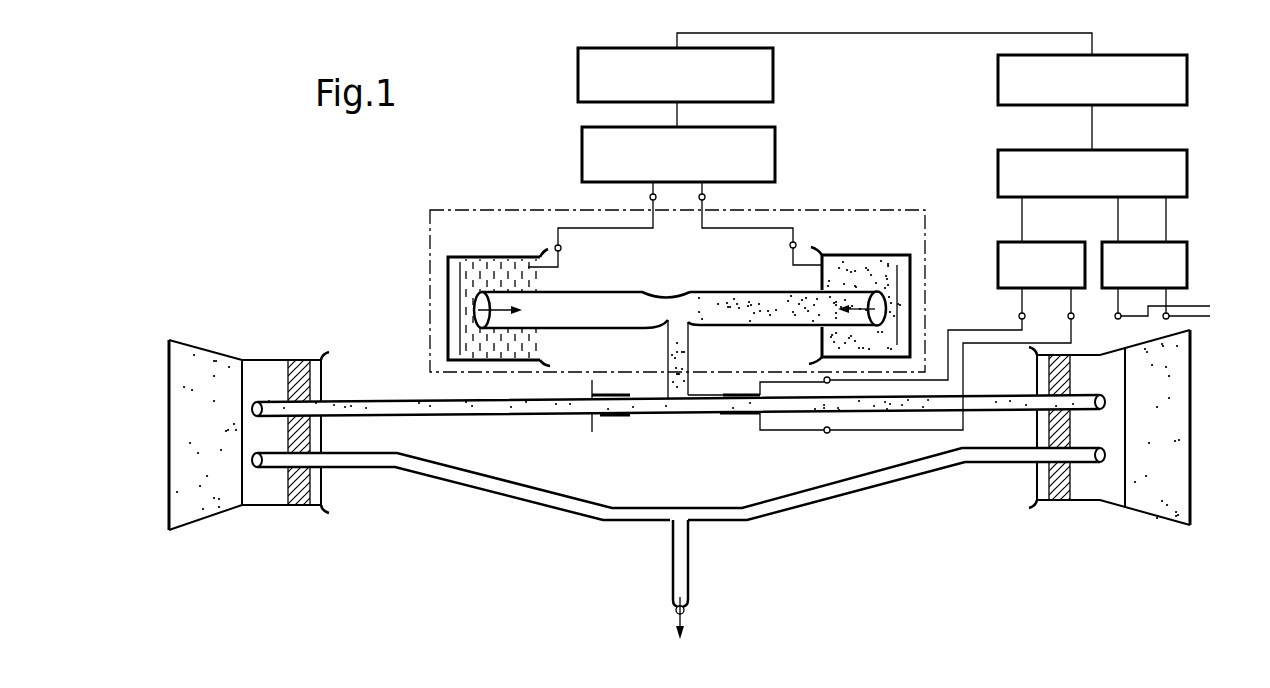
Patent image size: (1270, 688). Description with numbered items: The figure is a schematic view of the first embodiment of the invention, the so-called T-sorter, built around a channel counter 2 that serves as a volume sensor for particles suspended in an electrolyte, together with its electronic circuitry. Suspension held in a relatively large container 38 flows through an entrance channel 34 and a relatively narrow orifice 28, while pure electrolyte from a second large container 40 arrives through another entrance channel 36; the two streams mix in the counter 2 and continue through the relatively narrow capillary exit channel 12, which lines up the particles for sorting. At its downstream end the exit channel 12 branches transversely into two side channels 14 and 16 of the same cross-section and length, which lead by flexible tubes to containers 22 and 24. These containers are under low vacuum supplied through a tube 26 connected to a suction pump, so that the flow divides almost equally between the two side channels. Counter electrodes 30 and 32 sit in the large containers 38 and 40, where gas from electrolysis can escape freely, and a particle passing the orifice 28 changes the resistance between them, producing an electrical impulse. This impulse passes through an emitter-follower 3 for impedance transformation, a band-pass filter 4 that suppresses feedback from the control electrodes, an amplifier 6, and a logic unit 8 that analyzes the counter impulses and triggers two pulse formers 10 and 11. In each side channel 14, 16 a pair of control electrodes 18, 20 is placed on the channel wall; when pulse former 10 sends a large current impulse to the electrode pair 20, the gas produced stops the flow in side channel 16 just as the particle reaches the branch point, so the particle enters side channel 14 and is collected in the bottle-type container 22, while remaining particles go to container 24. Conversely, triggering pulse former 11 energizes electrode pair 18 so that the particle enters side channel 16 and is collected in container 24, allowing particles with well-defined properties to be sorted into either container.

The channel counter 2 is at (428, 225).
The emitter-follower 3 is at (775, 152).
The band-pass filter 4 is at (612, 48).
The amplifier 6 is at (998, 80).
The logic unit 8 is at (998, 175).
The pulse former 10 is at (998, 268).
The pulse former 11 is at (1190, 268).
The capillary exit channel 12 is at (668, 350).
The side channel 14 is at (510, 412).
The side channel 16 is at (707, 412).
The control electrode pair 18 is at (605, 417).
The control electrode pair 20 is at (737, 416).
The container 22 is at (218, 487).
The container 24 is at (1160, 478).
The tube 26 is at (668, 559).
The orifice 28 is at (680, 316).
The counter electrode 30 is at (805, 252).
The counter electrode 32 is at (530, 262).
The entrance channel 34 is at (778, 292).
The entrance channel 36 is at (572, 298).
The container 38 is at (895, 255).
The container 40 is at (468, 257).